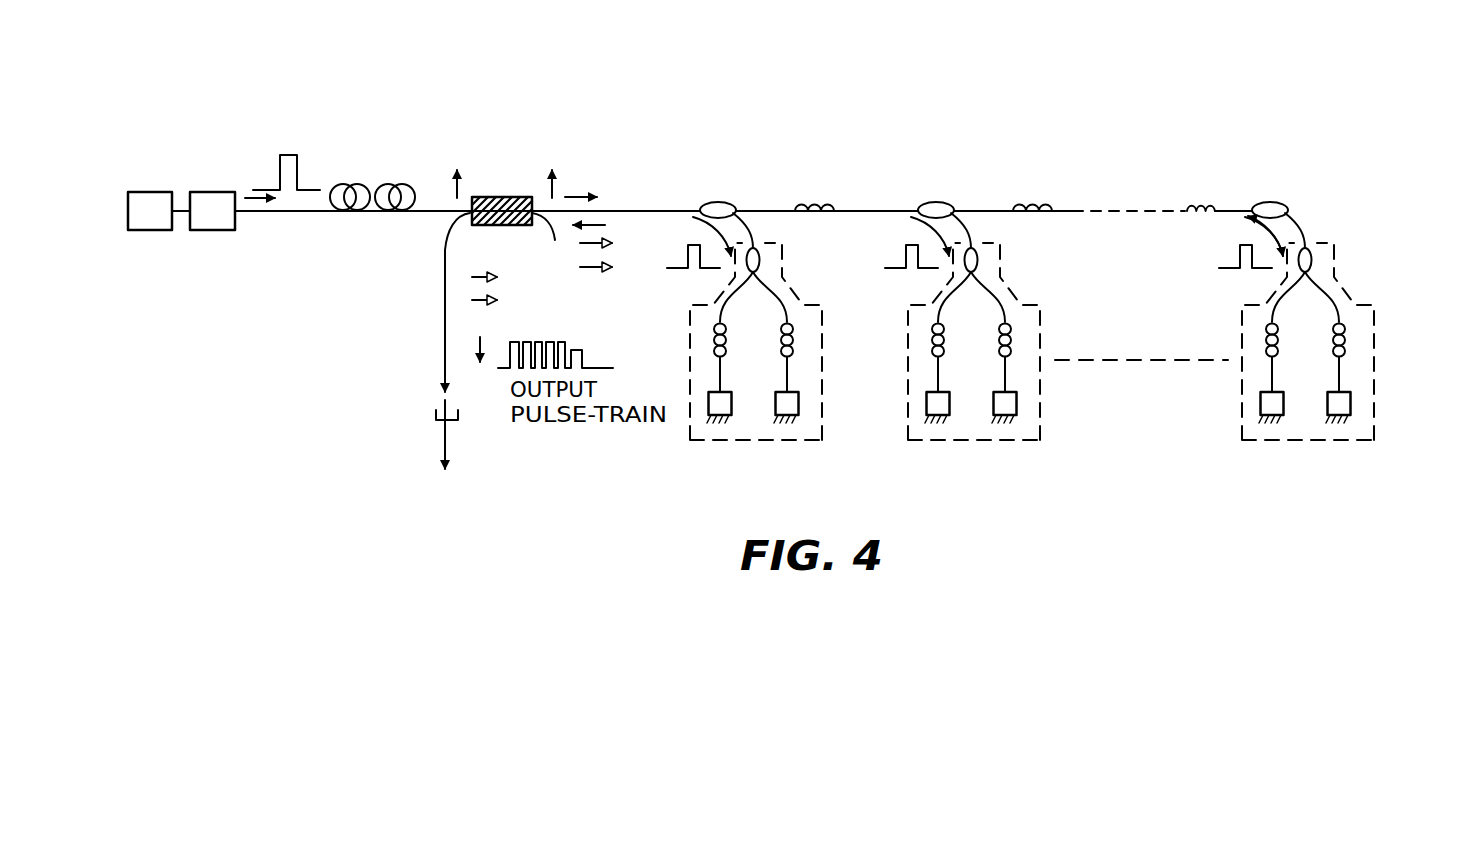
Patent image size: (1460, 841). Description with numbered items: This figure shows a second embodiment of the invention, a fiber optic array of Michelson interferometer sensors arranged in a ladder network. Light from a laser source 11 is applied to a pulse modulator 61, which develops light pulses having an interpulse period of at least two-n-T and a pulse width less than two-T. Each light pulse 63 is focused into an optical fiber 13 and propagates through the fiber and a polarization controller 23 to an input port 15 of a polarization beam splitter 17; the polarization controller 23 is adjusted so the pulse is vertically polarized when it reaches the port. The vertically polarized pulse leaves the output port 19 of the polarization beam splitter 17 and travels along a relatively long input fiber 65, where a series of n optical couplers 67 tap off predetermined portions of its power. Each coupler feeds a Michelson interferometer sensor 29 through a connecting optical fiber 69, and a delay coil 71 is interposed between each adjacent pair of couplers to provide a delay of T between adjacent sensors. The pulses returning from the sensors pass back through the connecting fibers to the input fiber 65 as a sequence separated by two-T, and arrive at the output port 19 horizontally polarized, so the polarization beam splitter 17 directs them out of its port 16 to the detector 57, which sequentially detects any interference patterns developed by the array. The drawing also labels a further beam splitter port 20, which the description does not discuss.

The laser source 11 is at (140, 222).
The optical fiber 13 is at (278, 213).
The input port 15 is at (474, 197).
The input port 16 is at (470, 224).
The polarization beam splitter 17 is at (493, 197).
The output port 19 is at (530, 197).
The PBS output port 20 is at (533, 223).
The polarization controller 23 is at (416, 135).
The Michelson interferometer sensor 29 is at (1057, 341).
The detector 57 is at (443, 421).
The pulse modulator 61 is at (237, 152).
The light pulse 63 is at (281, 172).
The input fiber 65 is at (661, 210).
The optical coupler 67 is at (1015, 210).
The connecting optical fiber 69 is at (1055, 240).
The delay coil 71 is at (1020, 177).